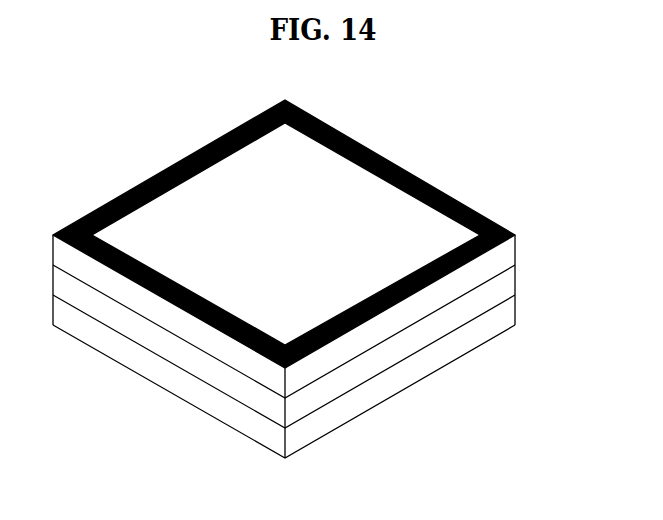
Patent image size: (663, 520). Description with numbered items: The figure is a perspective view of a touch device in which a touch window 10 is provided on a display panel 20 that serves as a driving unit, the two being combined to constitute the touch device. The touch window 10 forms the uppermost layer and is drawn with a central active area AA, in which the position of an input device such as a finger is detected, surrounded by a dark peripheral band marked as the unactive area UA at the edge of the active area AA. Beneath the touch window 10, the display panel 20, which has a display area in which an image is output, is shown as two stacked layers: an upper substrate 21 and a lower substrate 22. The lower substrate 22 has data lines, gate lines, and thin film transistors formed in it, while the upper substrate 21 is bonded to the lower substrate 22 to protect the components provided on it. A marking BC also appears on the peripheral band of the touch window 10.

The touch window 10 is at (314, 249).
The display panel 20 is at (330, 361).
The upper substrate 21 is at (511, 283).
The lower substrate 22 is at (511, 317).
The unactive area UA is at (492, 218).
The active area AA is at (287, 240).
The bezel / black coating region BC is at (177, 288).